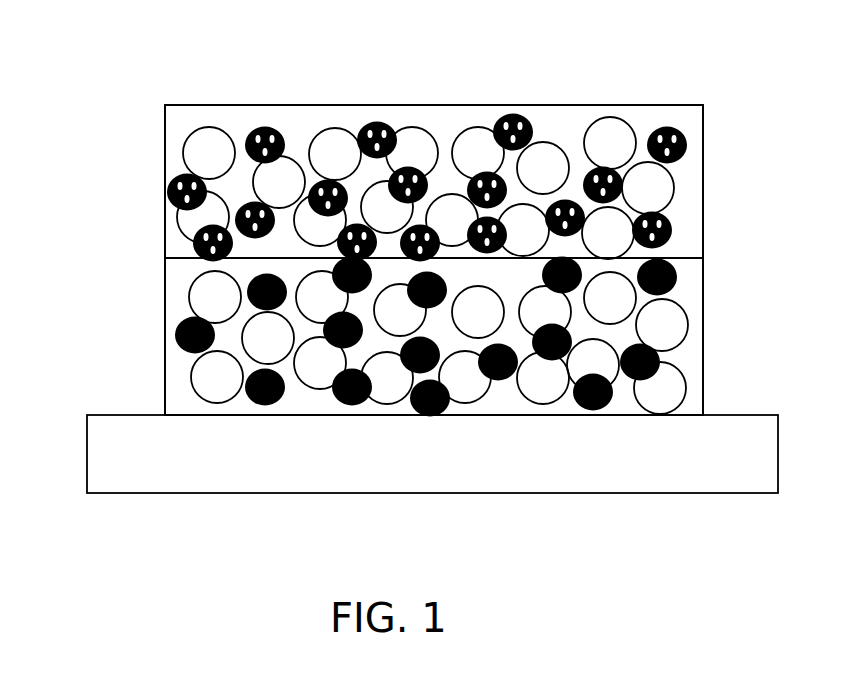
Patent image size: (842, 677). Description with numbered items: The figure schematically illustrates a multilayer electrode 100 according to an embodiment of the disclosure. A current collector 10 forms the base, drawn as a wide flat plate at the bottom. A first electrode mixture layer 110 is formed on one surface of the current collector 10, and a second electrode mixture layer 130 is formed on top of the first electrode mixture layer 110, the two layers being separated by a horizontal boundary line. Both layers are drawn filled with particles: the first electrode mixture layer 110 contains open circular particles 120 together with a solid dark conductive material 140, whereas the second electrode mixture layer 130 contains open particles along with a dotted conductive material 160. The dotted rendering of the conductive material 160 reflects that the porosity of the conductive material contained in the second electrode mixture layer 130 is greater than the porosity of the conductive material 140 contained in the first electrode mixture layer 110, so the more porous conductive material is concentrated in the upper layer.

The current collector 10 is at (87, 457).
The electrode structure 100 is at (668, 77).
The first electrode mixture layer 110 is at (165, 358).
The first particles 120 is at (190, 298).
The second electrode mixture layer 130 is at (165, 163).
The second particles 140 is at (677, 275).
The third particles 160 is at (687, 143).